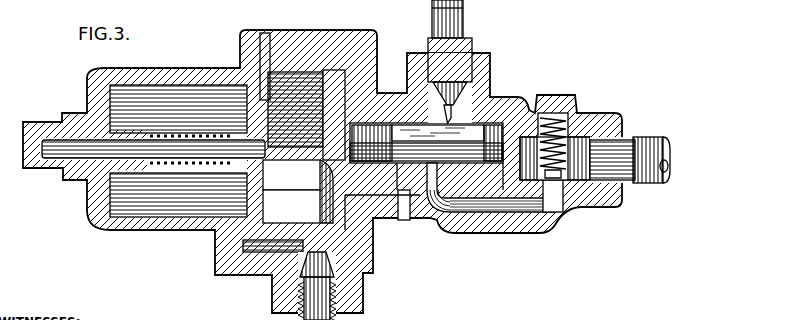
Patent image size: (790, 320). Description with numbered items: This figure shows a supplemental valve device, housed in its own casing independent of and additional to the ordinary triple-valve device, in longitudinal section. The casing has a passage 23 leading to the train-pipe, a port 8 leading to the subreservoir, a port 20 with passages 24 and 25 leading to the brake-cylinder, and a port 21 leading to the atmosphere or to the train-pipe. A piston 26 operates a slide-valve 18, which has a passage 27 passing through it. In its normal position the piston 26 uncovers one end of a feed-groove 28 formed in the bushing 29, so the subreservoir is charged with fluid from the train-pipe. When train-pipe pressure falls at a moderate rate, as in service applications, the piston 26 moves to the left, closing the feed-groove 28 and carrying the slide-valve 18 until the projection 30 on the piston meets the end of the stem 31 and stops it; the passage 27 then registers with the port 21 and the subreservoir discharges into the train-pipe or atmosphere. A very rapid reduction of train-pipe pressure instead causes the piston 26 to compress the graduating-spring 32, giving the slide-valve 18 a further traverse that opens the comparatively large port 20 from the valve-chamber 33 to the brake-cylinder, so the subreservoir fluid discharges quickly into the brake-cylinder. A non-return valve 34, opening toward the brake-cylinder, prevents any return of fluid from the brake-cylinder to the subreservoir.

The port 8 is at (493, 93).
The slide-valve 18 is at (450, 176).
The port 20 is at (491, 210).
The port 21 is at (404, 220).
The passage 23 is at (335, 268).
The passage 24 is at (506, 201).
The passage 25 is at (556, 146).
The piston 26 is at (288, 206).
The passage 27 is at (426, 143).
The feed-groove 28 is at (341, 103).
The bushing 29 is at (291, 90).
The projection 30 is at (291, 176).
The stem 31 is at (152, 149).
The graduating-spring 32 is at (178, 151).
The valve-chamber 33 is at (382, 212).
The non-return valve 34 is at (624, 171).